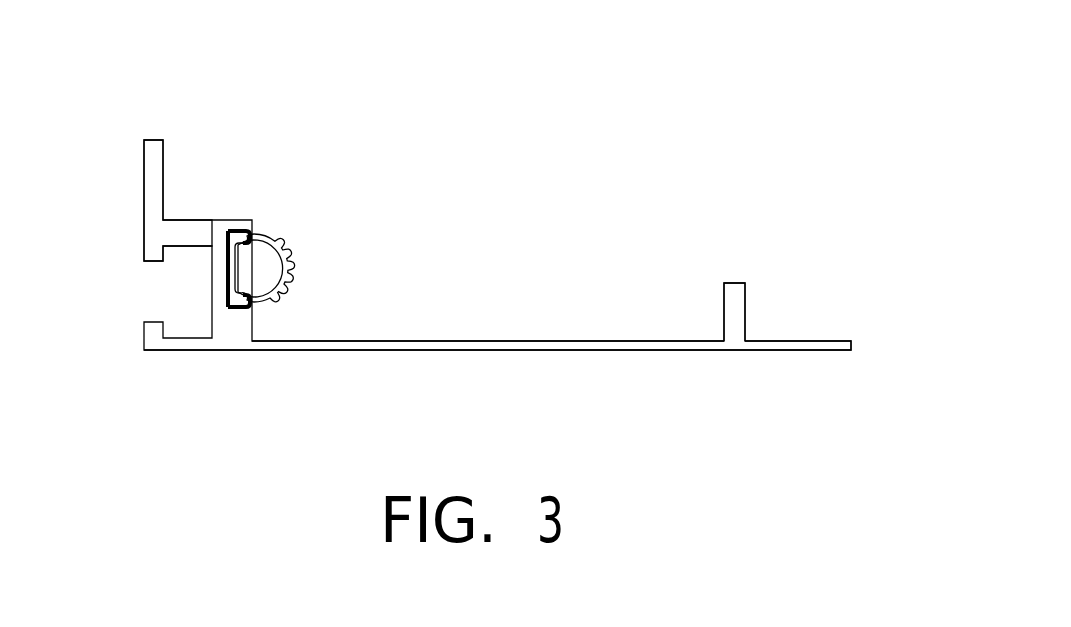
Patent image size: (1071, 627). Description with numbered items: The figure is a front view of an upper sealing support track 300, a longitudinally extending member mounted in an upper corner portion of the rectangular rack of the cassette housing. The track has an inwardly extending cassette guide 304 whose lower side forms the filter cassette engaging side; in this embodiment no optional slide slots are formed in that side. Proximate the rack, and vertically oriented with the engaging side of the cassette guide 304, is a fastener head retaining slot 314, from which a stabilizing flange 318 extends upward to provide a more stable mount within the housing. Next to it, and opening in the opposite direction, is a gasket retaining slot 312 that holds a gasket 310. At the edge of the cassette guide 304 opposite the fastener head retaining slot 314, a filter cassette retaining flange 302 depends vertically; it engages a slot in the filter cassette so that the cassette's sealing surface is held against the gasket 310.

The upper sealing support track 300 is at (652, 117).
The filter cassette retaining flange 302 is at (734, 288).
The cassette guide 304 is at (531, 345).
The gasket 310 is at (292, 257).
The gasket retaining slot 312 is at (232, 229).
The fastener head retaining slot 314 is at (187, 337).
The stabilizing flange 318 is at (154, 143).